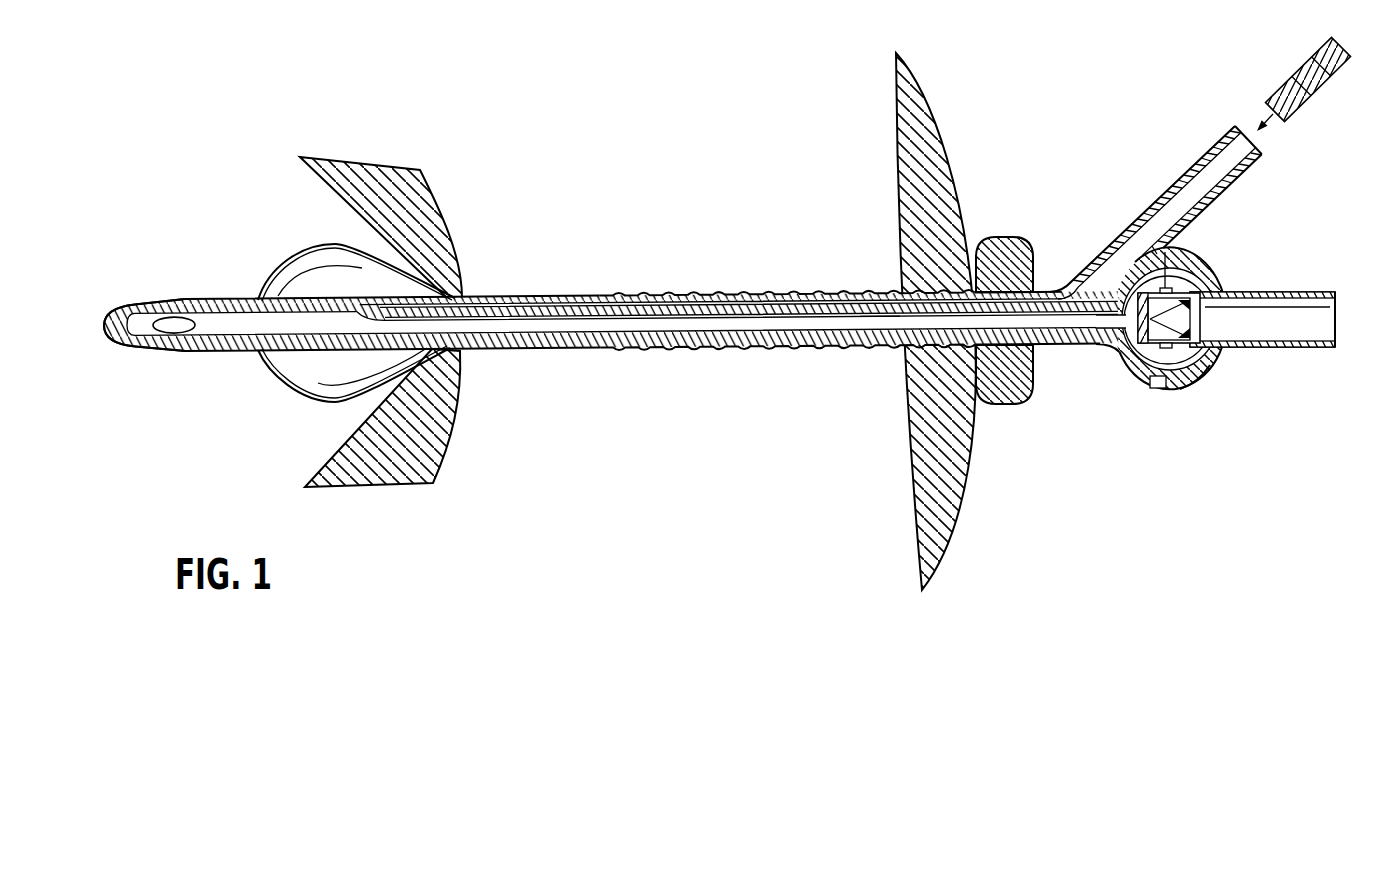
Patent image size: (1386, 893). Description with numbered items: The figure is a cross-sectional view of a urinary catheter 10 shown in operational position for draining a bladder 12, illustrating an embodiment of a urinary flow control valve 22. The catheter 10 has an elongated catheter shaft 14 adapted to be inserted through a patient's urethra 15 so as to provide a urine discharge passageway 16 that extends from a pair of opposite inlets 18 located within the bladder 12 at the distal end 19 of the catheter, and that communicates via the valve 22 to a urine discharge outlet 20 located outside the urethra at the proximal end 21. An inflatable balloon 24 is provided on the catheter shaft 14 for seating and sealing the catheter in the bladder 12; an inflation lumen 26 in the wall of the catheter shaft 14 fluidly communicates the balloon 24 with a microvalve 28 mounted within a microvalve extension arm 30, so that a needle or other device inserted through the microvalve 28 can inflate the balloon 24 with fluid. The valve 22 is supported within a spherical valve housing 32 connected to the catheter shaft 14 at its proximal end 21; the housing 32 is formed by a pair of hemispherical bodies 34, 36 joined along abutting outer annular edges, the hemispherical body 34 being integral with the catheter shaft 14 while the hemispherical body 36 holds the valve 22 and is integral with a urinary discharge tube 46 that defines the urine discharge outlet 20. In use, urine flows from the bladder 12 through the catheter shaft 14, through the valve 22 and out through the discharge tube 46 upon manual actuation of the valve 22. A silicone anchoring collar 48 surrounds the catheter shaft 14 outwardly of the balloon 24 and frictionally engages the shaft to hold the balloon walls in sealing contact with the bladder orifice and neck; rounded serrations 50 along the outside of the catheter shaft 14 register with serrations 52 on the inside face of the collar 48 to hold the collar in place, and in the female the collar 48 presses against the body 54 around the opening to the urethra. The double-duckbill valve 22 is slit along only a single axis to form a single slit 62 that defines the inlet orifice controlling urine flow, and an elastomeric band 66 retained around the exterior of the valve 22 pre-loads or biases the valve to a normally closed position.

The urinary catheter 10 is at (1085, 80).
The bladder 12 is at (437, 196).
The catheter shaft 14 is at (611, 311).
The urethra 15 is at (886, 312).
The urine discharge passageway 16 is at (564, 334).
The inlets 18 is at (172, 333).
The distal end 19 is at (136, 302).
The urine discharge outlet 20 is at (1284, 329).
The proximal end 21 is at (1315, 348).
The urinary flow control valve 22 is at (1190, 323).
The inflatable balloon 24 is at (310, 398).
The inflation lumen 26 is at (551, 312).
The microvalve 28 is at (1290, 78).
The microvalve extension arm 30 is at (1187, 171).
The spherical valve housing 32 is at (1184, 360).
The hemispherical body 34 is at (1110, 366).
The hemispherical body 36 is at (1222, 372).
The urinary discharge tube 46 is at (1283, 292).
The anchoring collar 48 is at (1014, 404).
The rounded serrations 50 is at (790, 350).
The serrations 52 is at (1021, 282).
The body 54 is at (957, 510).
The slit 62 is at (1132, 328).
The elastomeric band 66 is at (1169, 348).